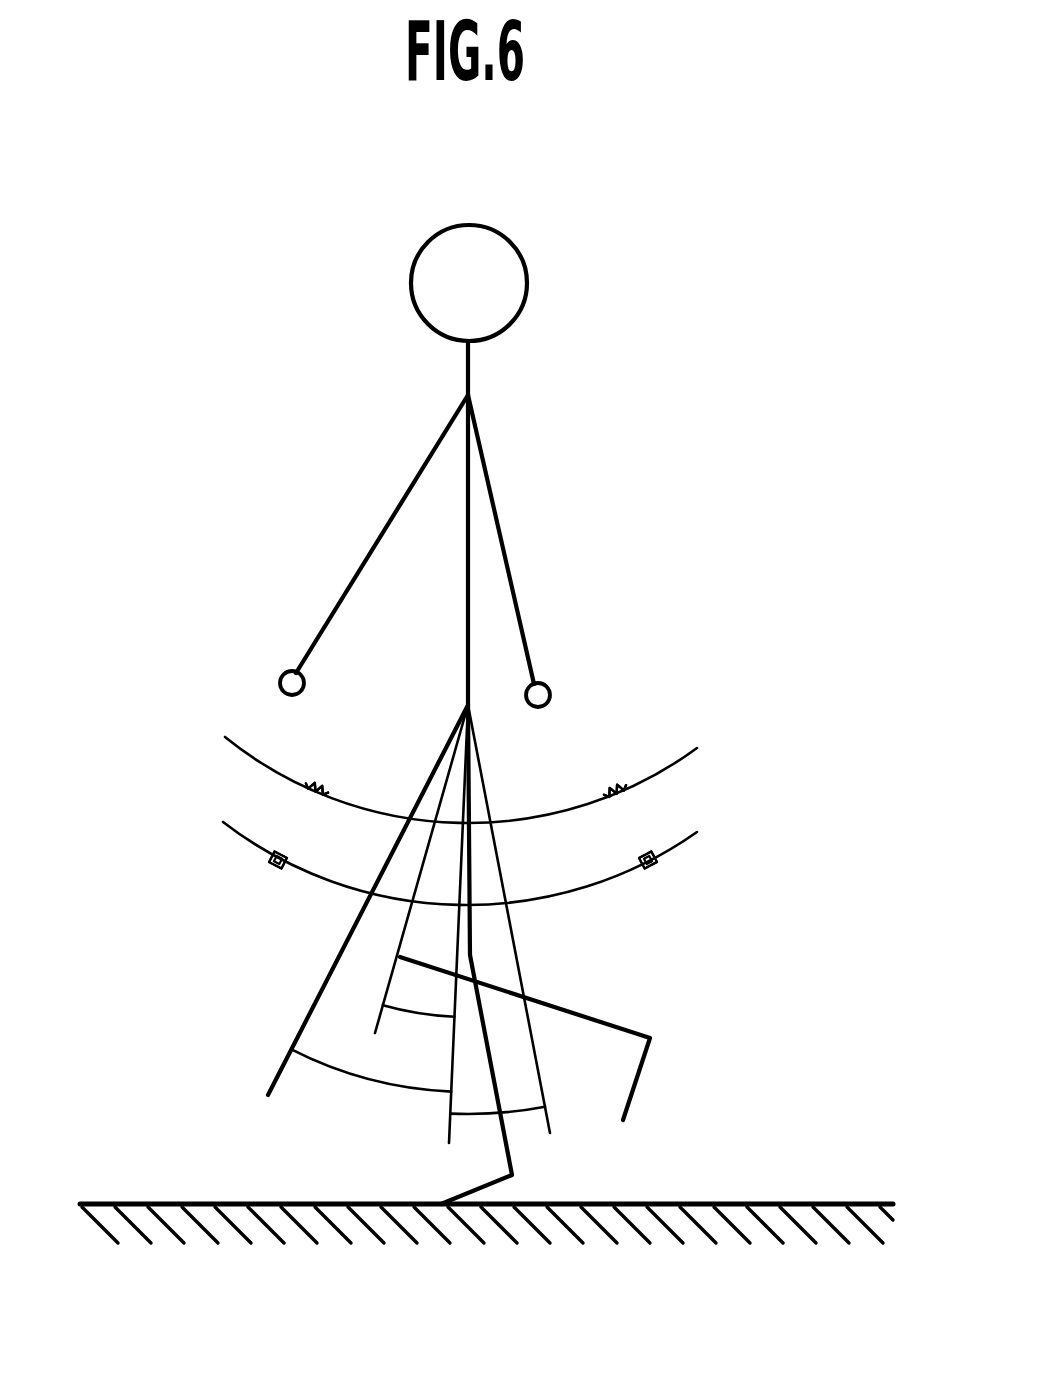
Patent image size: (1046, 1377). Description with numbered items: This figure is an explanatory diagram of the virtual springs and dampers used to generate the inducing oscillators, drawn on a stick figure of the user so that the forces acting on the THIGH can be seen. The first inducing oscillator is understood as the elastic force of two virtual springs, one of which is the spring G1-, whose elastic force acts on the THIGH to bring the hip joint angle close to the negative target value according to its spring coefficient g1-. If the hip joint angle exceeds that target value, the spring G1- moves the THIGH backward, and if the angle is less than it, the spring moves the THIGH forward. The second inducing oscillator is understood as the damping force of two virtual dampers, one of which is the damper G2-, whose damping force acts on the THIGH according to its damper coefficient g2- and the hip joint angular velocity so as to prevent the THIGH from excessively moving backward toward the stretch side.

The thigh THIGH is at (415, 738).
The virtual spring G1- is at (619, 733).
The virtual damper G2- is at (660, 797).
The first coefficient g1- is at (612, 814).
The second coefficient g2- is at (654, 882).